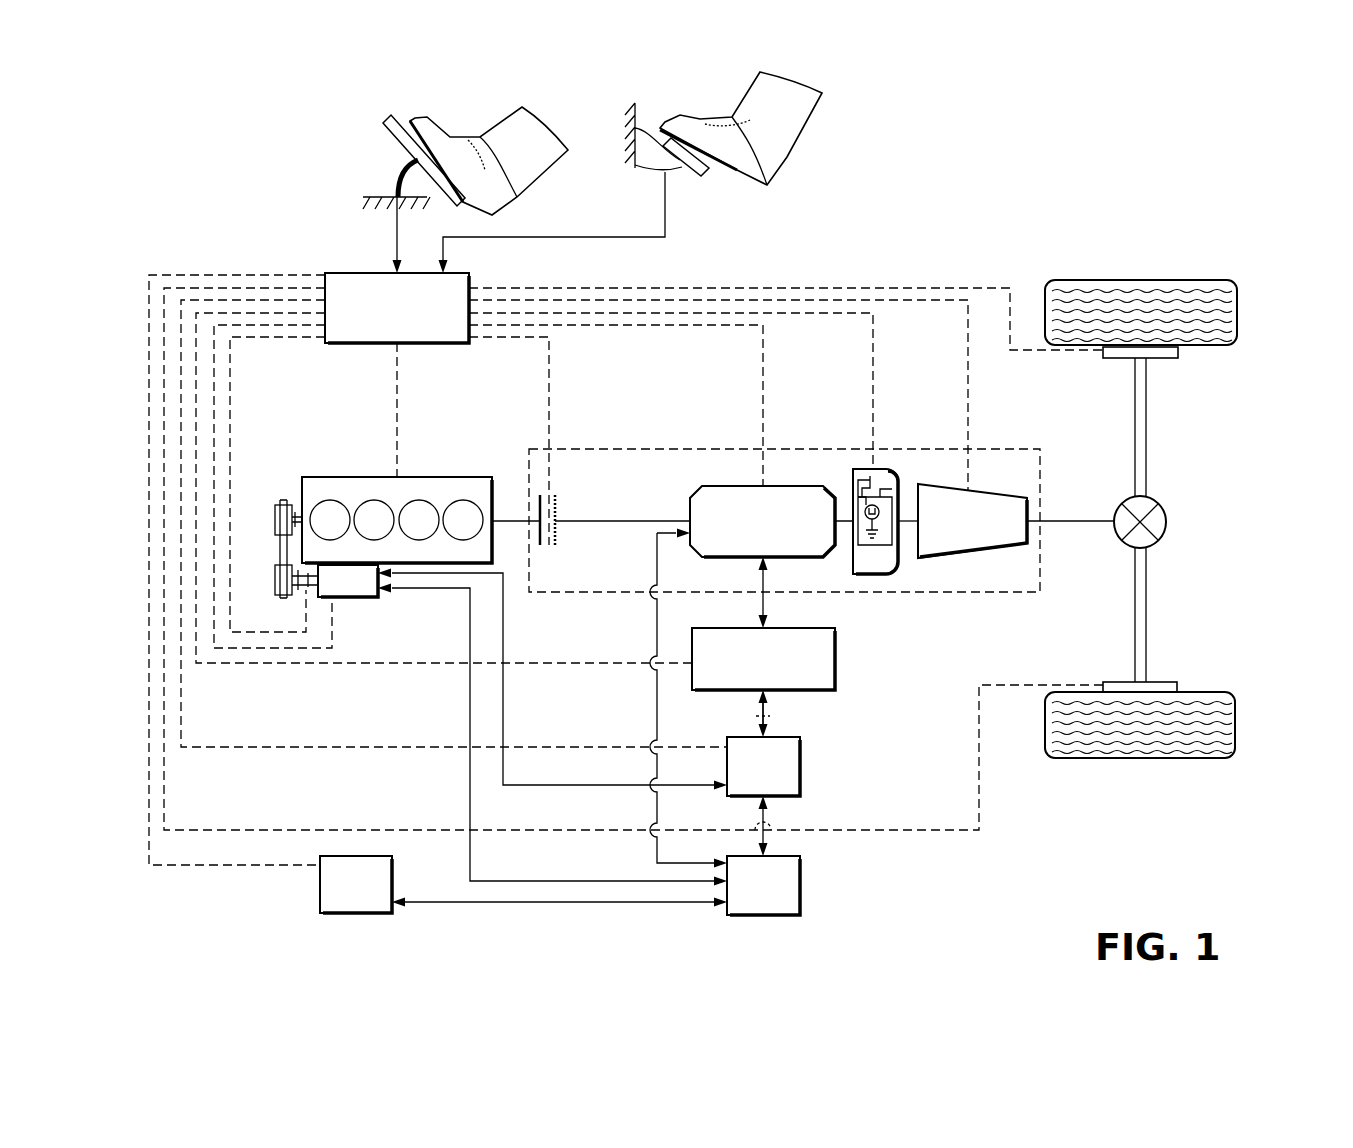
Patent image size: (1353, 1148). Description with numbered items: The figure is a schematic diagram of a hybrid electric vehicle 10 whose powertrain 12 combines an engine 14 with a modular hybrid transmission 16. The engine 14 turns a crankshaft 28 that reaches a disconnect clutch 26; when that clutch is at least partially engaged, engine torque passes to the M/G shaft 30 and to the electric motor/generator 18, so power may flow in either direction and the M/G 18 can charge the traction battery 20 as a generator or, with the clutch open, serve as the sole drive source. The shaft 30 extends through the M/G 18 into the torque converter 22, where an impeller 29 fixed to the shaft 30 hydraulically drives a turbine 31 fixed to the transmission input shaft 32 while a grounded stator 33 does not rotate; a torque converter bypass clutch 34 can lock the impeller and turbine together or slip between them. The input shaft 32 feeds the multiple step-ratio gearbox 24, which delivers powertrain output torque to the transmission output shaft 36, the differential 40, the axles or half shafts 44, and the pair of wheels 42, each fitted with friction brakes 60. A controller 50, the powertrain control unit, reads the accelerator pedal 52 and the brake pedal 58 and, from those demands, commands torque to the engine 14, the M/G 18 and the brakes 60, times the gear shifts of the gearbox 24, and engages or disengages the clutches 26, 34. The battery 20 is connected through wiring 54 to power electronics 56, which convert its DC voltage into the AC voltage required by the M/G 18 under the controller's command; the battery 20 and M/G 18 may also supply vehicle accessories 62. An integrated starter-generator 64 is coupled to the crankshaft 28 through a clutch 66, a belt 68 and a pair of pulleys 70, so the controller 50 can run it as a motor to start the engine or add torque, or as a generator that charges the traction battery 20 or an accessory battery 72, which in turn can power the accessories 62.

The hybrid electric vehicle 10 is at (954, 78).
The powertrain 12 is at (452, 689).
The engine 14 is at (352, 477).
The transmission 16 is at (838, 449).
The electric motor/generator (M/G) 18 is at (735, 486).
The traction battery 20 is at (800, 768).
The torque converter 22 is at (872, 575).
The gearbox 24 is at (975, 554).
The disconnect clutch 26 is at (556, 508).
The crankshaft 28 is at (298, 512).
The impeller 29 is at (868, 497).
The M/G shaft 30 is at (637, 521).
The turbine 31 is at (862, 498).
The transmission input shaft 32 is at (914, 520).
The stator 33 is at (868, 518).
The torque converter bypass clutch 34 is at (880, 470).
The transmission output shaft 36 is at (1065, 521).
The differential 40 is at (1167, 521).
The wheels 42 is at (1141, 280).
The axles or half shafts 44 is at (1147, 422).
The controller (powertrain control unit) 50 is at (367, 273).
The accelerator pedal 52 is at (400, 148).
The wiring 54 is at (758, 716).
The power electronics 56 is at (835, 665).
The brake pedal 58 is at (707, 174).
The friction brakes 60 is at (1180, 351).
The vehicle accessories 62 is at (800, 888).
The integrated starter-generator (ISG) 64 is at (366, 597).
The clutch 66 is at (302, 592).
The belt 68 is at (280, 553).
The pulleys 70 is at (275, 518).
The accessory battery 72 is at (320, 888).